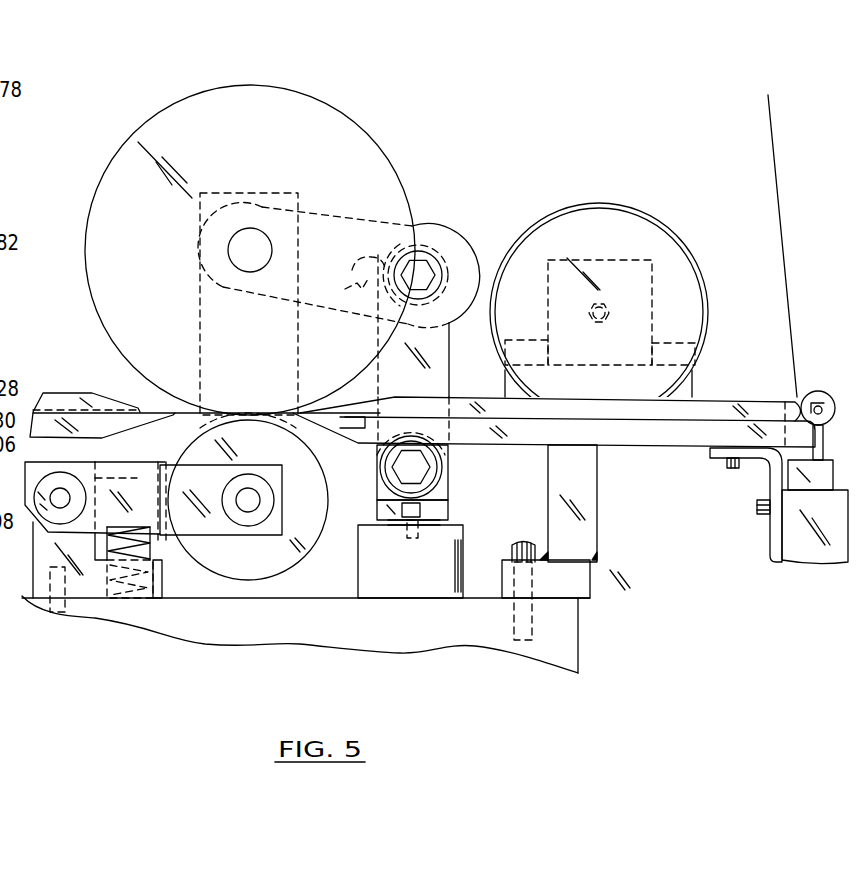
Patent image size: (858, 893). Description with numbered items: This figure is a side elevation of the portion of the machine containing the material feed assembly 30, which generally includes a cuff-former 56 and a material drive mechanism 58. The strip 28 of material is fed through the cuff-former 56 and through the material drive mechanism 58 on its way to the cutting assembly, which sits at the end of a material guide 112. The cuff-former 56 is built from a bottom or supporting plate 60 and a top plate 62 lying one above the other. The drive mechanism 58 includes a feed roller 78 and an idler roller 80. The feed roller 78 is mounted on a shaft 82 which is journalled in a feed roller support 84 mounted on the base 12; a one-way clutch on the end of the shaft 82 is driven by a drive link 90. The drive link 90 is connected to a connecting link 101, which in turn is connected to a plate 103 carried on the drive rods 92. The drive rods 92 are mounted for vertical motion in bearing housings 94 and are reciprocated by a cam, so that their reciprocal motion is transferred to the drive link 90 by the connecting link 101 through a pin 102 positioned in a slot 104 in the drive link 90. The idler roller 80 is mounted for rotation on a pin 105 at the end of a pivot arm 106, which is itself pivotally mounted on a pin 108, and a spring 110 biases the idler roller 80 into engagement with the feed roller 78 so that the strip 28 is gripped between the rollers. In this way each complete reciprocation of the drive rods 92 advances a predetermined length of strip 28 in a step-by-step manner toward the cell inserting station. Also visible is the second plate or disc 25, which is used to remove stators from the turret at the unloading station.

The base 12 is at (216, 638).
The second plate or disc 25 is at (641, 214).
The strip of material 28 is at (790, 310).
The material feed assembly 30 is at (452, 205).
The cuff-former 56 is at (678, 455).
The material drive mechanism 58 is at (343, 88).
The bottom or supporting plate 60 is at (638, 436).
The top plate 62 is at (722, 402).
The feed roller 78 is at (363, 130).
The idler roller 80 is at (287, 563).
The shaft 82 is at (233, 248).
The feed roller support 84 is at (198, 296).
The drive link 90 is at (423, 227).
The drive rods 92 is at (440, 521).
The bearing housings 94 is at (457, 549).
The connecting link 101 is at (449, 370).
The pin 102 is at (446, 252).
The plate 103 is at (382, 497).
The slot 104 is at (356, 284).
The pin 105 is at (250, 500).
The pivot arm 106 is at (146, 478).
The pin 108 is at (60, 495).
The spring 110 is at (143, 562).
The material guide 112 is at (62, 398).